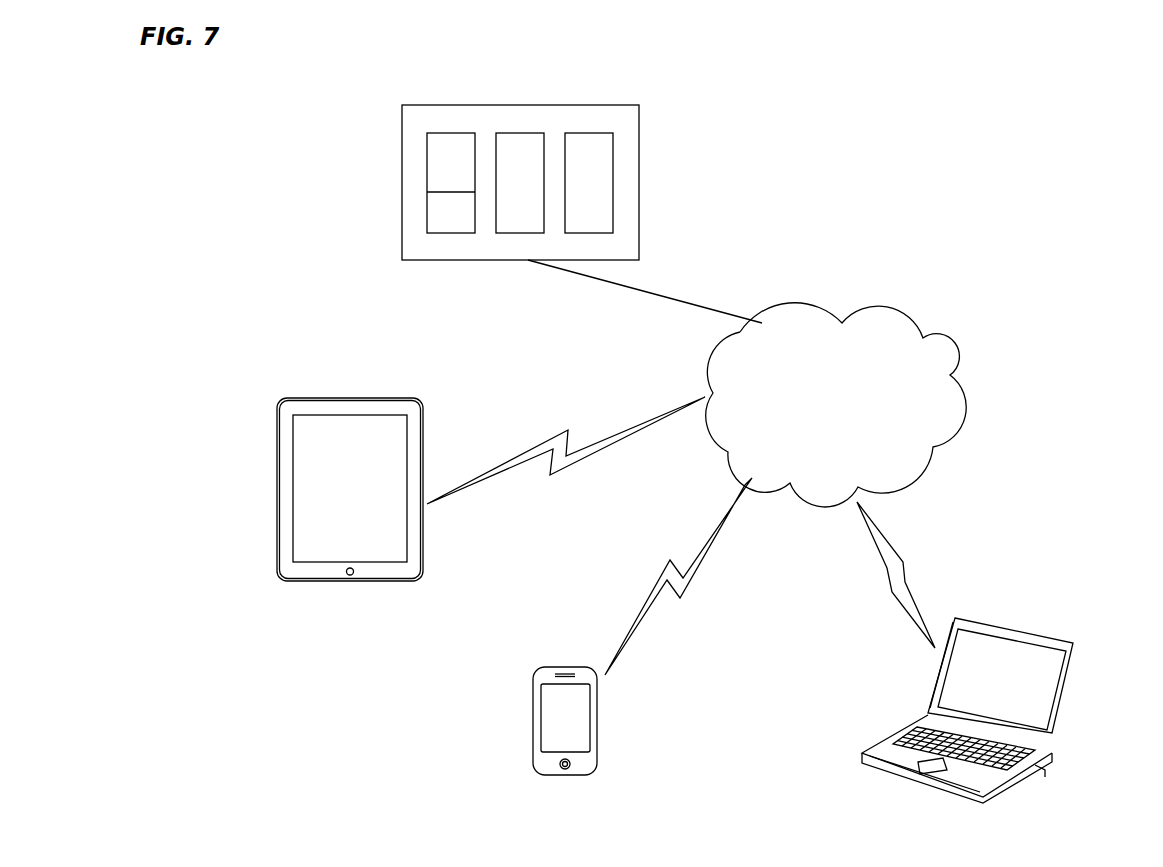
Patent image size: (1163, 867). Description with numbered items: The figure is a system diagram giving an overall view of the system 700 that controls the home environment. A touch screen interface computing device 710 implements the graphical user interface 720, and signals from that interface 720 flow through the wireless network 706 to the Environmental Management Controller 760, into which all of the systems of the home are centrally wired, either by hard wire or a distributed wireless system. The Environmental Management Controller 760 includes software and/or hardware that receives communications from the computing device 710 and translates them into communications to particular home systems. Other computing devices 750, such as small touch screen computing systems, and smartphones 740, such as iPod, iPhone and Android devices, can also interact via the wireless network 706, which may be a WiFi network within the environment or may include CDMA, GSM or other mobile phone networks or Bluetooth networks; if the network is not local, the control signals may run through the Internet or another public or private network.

The system 700 is at (228, 131).
The wireless network 706 is at (848, 452).
The touch screen interface computing device 710 is at (321, 397).
The interface 720 is at (327, 519).
The smartphone 740 is at (598, 742).
The other computing device 750 is at (885, 748).
The Environmental Management Controller 760 is at (640, 158).